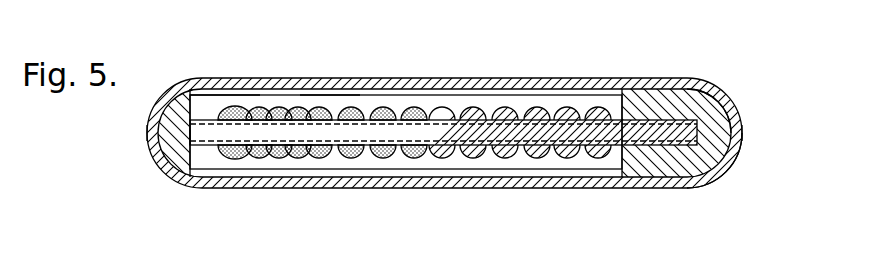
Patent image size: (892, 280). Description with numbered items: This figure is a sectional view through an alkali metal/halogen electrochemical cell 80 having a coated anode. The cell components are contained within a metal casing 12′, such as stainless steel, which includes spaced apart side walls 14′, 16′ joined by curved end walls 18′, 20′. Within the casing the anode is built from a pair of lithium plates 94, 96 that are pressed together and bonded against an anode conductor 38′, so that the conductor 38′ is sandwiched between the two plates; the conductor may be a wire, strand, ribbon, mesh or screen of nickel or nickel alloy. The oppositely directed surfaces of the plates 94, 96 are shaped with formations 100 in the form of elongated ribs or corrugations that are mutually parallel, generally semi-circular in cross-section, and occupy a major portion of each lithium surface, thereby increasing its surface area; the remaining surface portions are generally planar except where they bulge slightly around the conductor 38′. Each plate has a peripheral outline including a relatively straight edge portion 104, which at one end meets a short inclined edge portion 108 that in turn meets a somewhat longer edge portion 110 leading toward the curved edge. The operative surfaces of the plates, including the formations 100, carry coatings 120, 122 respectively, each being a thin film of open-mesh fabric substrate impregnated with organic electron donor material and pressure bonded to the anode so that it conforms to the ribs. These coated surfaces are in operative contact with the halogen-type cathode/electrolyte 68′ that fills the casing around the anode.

The casing 12′ is at (736, 165).
The alkali metal/halogen electrochemical cell 80 is at (747, 78).
The curved end wall 18′ is at (147, 133).
The curved end wall 20′ is at (742, 138).
The cathode/electrolyte 68′ is at (170, 147).
The lithium plate 94 is at (686, 93).
The lithium plate 96 is at (697, 189).
The straight edge portion 104 is at (458, 95).
The inclined edge portion 108 is at (305, 100).
The edge portion 110 is at (213, 100).
The side wall 14′ is at (297, 107).
The side wall 16′ is at (298, 145).
The anode conductor 38′ is at (655, 145).
The coating 120 is at (386, 107).
The coating 122 is at (380, 158).
The formations 100 is at (566, 107).